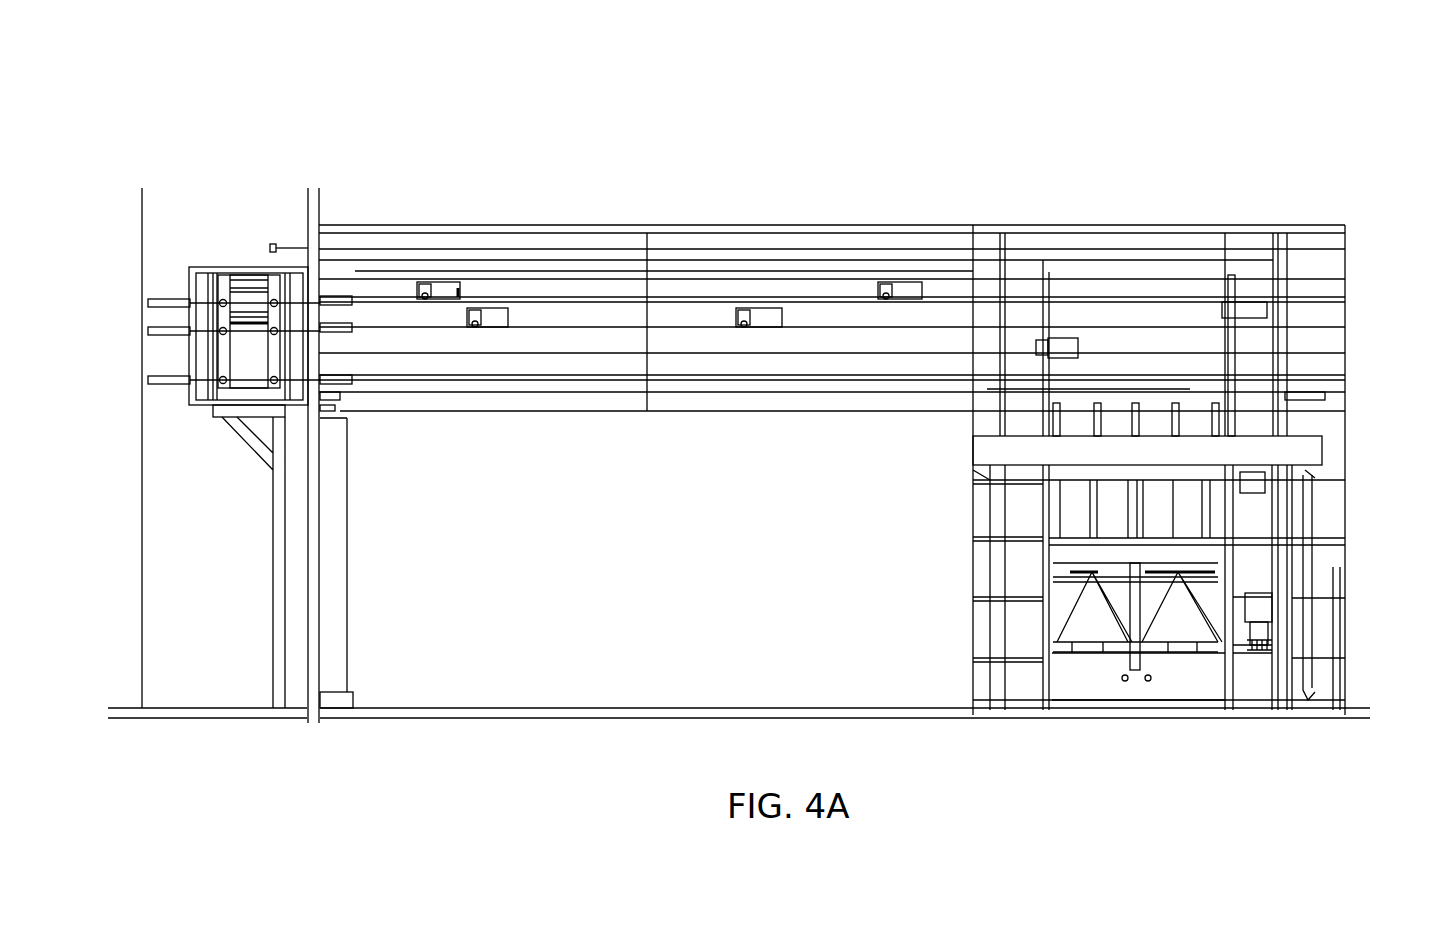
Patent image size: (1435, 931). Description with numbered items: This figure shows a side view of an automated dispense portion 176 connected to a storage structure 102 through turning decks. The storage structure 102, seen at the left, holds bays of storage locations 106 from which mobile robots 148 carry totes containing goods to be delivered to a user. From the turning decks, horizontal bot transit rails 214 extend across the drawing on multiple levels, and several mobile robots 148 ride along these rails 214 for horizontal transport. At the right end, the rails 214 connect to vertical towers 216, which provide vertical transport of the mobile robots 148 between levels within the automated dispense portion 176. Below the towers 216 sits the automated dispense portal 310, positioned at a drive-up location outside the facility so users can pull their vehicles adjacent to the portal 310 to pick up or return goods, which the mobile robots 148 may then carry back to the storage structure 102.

The storage structure 102 is at (142, 343).
The storage locations 106 is at (142, 383).
The mobile robots 148 is at (450, 282).
The bot transit rails 214 is at (637, 225).
The automated dispense portion 176 is at (1293, 173).
The vertical towers 216 is at (1290, 373).
The automated dispense portal 310 is at (1105, 687).